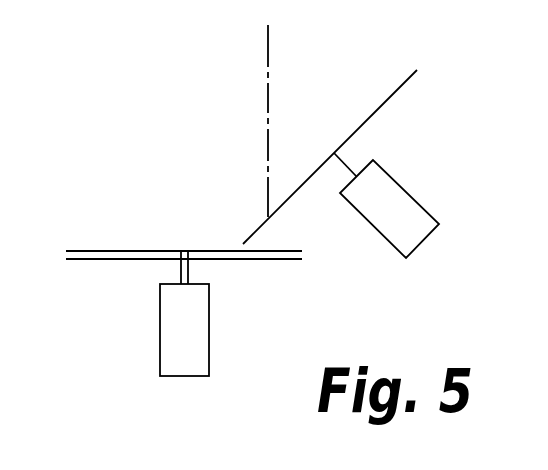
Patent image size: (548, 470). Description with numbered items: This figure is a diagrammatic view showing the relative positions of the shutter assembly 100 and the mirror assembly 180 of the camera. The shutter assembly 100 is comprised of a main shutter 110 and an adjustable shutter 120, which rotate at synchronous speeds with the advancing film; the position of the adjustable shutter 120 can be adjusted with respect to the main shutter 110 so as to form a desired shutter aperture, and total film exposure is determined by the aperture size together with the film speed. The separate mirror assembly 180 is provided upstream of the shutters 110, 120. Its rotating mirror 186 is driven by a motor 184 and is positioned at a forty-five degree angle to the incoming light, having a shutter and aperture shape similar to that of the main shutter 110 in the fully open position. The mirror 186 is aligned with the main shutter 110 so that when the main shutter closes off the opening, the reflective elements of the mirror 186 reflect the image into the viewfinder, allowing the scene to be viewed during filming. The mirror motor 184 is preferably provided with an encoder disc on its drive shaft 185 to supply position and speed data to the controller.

The shutter assembly 100 is at (223, 298).
The main shutter 110 is at (92, 250).
The adjustable shutter 120 is at (108, 259).
The mirror assembly 180 is at (410, 229).
The motor 184 is at (403, 200).
The drive shaft 185 is at (345, 162).
The rotating mirror 186 is at (390, 98).